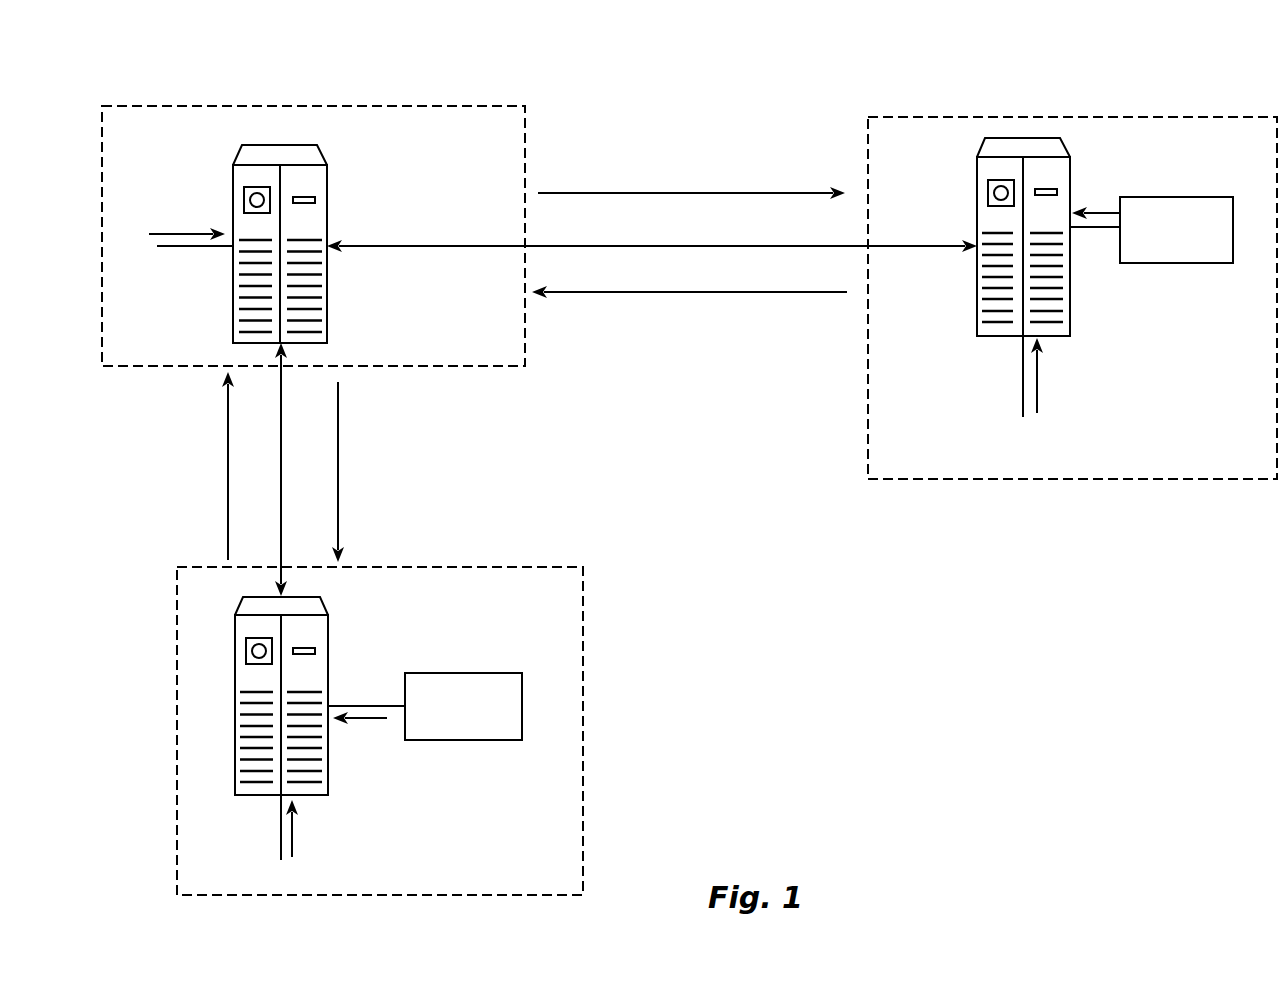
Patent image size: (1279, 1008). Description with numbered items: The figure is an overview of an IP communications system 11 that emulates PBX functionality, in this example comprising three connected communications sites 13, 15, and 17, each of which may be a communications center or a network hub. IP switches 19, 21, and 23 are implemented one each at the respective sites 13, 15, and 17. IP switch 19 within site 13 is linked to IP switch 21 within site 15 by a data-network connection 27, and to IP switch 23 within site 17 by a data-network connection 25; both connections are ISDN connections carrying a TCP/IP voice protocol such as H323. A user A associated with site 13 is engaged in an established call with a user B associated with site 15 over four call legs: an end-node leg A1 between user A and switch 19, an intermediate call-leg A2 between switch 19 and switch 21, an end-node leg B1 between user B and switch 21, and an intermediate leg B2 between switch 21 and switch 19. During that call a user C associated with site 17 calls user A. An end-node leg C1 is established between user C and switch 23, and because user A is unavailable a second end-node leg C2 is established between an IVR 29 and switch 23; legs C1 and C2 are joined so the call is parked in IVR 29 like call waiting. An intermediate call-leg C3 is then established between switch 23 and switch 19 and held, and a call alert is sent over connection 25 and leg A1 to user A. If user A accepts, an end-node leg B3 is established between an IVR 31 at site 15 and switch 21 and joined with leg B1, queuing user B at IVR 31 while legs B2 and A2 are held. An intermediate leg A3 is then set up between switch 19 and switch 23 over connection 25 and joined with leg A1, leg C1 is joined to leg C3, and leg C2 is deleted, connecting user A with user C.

The IP communications system 11 is at (670, 116).
The communications site 13 is at (163, 375).
The communications site 15 is at (517, 555).
The communications site 17 is at (846, 426).
The IP switch 19 is at (327, 215).
The IP switch 21 is at (328, 680).
The IP switch 23 is at (980, 224).
The data-network connection 25 is at (840, 248).
The data-network connection 27 is at (281, 477).
The IVR 29 is at (1190, 263).
The IVR 31 is at (460, 673).
The user A is at (183, 250).
The end-node leg A1 is at (188, 233).
The intermediate call-leg A2 is at (338, 523).
The intermediate leg A3 is at (590, 193).
The user B is at (279, 845).
The end-node leg B1 is at (292, 852).
The intermediate leg B2 is at (228, 512).
The end-node leg B3 is at (360, 718).
The user C is at (1022, 395).
The end-node leg C1 is at (1038, 368).
The end-node leg C2 is at (1090, 210).
The intermediate call-leg C3 is at (570, 292).